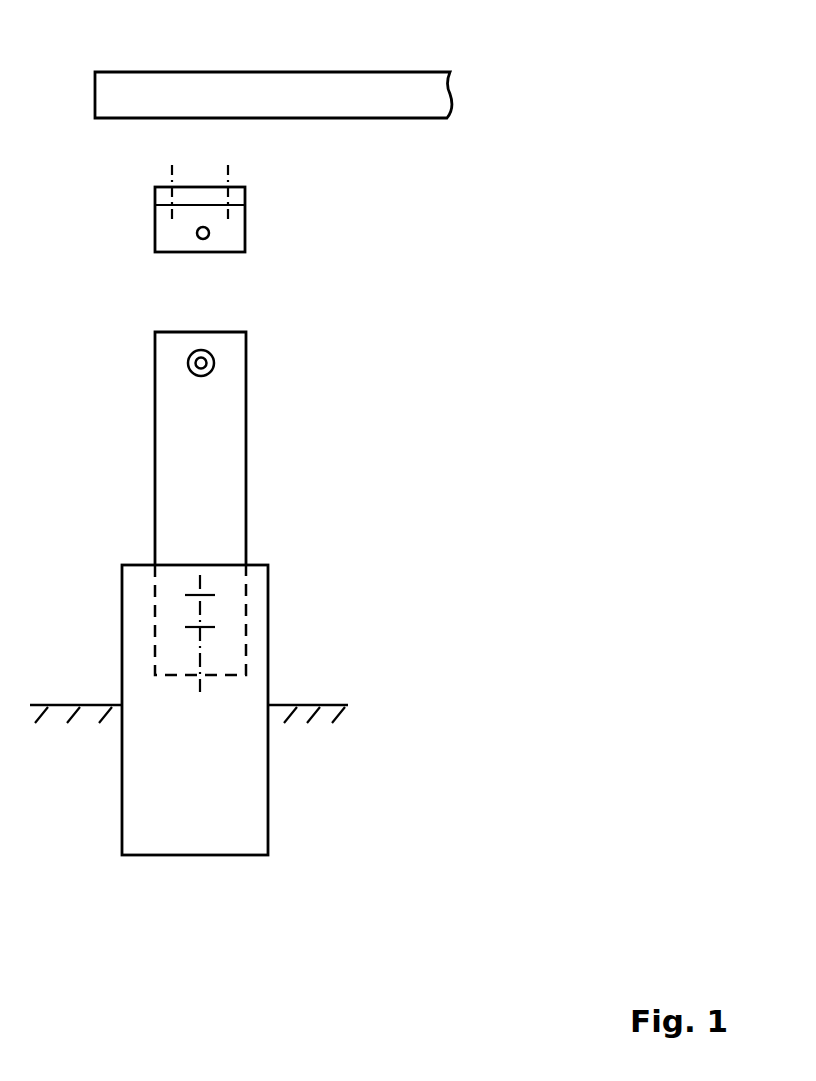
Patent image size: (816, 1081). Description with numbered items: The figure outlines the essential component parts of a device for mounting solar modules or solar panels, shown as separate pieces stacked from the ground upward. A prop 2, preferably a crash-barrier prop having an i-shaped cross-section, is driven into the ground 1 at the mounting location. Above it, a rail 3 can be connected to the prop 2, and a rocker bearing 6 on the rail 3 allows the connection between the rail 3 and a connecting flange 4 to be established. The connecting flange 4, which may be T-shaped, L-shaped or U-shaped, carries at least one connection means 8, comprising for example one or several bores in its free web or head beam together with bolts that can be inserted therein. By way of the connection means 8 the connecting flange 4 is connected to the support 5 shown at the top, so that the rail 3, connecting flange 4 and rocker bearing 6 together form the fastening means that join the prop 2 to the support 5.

The ground 1 is at (189, 710).
The prop 2 is at (253, 620).
The rail 3 is at (215, 475).
The connecting flange 4 is at (228, 242).
The support 5 is at (410, 82).
The rocker bearing 6 is at (214, 363).
The connection means 8 is at (232, 170).